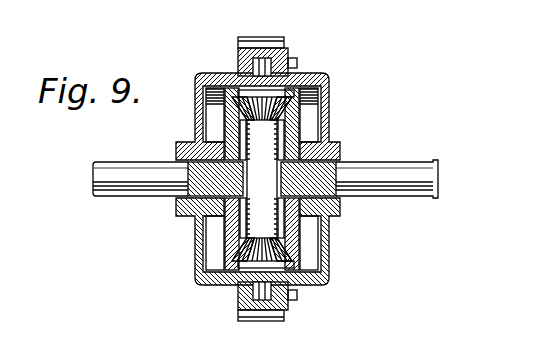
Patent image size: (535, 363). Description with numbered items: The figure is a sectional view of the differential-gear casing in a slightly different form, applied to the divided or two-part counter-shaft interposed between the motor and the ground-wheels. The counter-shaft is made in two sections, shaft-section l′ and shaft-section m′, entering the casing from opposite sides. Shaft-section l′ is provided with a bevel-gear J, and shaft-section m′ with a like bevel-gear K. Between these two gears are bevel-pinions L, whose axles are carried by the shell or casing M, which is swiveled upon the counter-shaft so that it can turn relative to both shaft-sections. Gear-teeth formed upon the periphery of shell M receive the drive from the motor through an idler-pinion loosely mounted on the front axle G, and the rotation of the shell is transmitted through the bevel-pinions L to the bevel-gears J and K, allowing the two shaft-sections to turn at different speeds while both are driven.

The front axle G is at (272, 179).
The shell or casing M is at (303, 72).
The bevel-gear J is at (222, 247).
The bevel-gear K is at (300, 248).
The bevel-pinions L is at (274, 118).
The shaft-section l′ is at (140, 166).
The shaft-section m′ is at (387, 169).